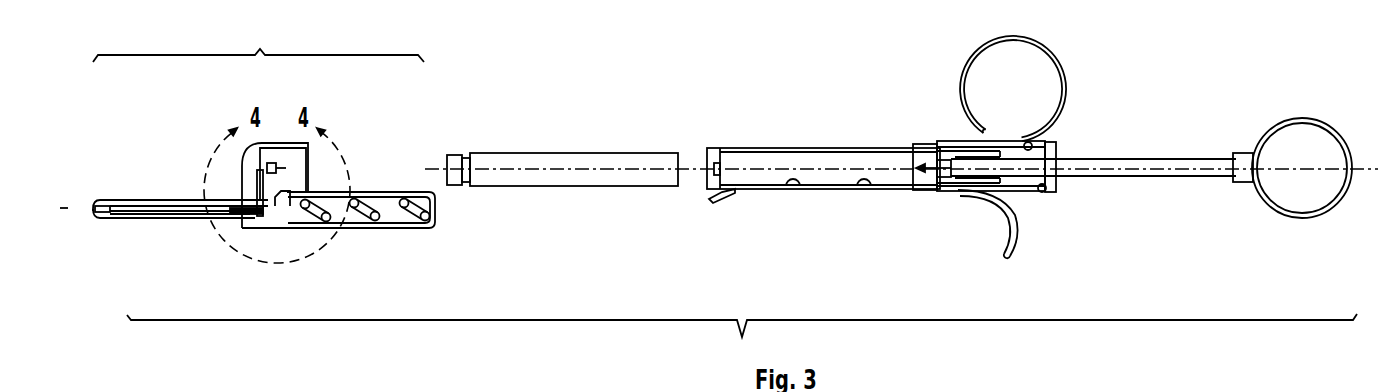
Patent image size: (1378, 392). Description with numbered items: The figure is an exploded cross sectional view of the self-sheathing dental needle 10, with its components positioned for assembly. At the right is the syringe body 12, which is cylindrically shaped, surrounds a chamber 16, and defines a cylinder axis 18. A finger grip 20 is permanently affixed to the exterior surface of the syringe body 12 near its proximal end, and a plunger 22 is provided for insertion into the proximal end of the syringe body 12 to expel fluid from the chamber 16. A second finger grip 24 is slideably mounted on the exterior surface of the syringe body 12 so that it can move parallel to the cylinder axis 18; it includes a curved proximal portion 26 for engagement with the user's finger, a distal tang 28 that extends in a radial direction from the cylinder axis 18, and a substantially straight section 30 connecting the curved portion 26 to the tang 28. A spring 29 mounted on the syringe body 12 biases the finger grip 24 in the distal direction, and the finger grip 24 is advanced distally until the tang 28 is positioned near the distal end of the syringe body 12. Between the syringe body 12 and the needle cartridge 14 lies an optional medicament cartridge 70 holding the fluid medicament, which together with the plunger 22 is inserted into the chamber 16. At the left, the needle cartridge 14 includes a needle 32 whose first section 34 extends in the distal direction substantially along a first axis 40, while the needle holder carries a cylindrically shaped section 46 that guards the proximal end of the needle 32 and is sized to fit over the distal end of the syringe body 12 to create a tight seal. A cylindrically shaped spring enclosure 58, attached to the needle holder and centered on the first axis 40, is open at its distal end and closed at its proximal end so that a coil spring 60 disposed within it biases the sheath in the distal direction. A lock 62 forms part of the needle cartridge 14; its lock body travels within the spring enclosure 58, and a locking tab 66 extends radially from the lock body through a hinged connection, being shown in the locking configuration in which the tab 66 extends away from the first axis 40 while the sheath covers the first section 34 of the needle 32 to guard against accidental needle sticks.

The self-sheathing dental needle 10 is at (628, 61).
The syringe body 12 is at (776, 146).
The needle cartridge 14 is at (258, 37).
The chamber 16 is at (872, 156).
The cylinder axis 18 is at (1367, 170).
The finger grip 20 is at (1068, 72).
The plunger 22 is at (1127, 176).
The second finger grip 24 is at (873, 190).
The curved proximal portion 26 is at (1017, 247).
The distal tang 28 is at (727, 197).
The spring 29 is at (1044, 192).
The substantially straight section 30 is at (795, 190).
The needle 32 is at (170, 213).
The first section 34 is at (137, 202).
The first axis 40 is at (78, 207).
The cylindrically shaped section 46 is at (742, 353).
The spring enclosure 58 is at (413, 231).
The coil spring 60 is at (352, 209).
The lock 62 is at (277, 212).
The locking tab 66 is at (284, 188).
The medicament cartridge 70 is at (530, 153).